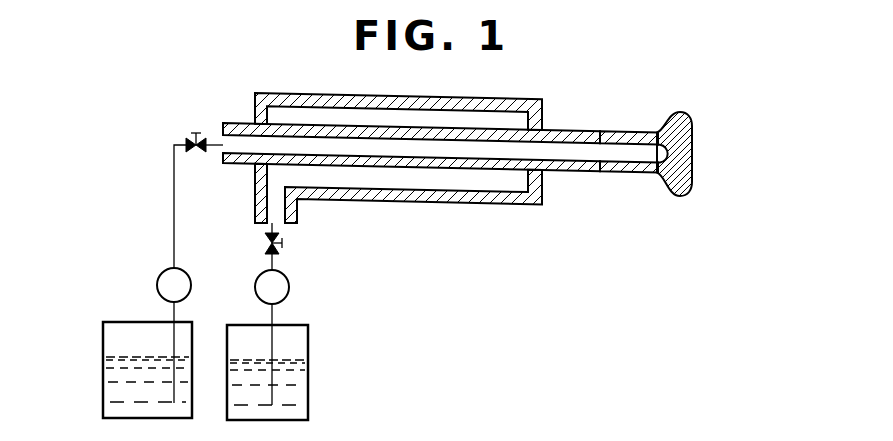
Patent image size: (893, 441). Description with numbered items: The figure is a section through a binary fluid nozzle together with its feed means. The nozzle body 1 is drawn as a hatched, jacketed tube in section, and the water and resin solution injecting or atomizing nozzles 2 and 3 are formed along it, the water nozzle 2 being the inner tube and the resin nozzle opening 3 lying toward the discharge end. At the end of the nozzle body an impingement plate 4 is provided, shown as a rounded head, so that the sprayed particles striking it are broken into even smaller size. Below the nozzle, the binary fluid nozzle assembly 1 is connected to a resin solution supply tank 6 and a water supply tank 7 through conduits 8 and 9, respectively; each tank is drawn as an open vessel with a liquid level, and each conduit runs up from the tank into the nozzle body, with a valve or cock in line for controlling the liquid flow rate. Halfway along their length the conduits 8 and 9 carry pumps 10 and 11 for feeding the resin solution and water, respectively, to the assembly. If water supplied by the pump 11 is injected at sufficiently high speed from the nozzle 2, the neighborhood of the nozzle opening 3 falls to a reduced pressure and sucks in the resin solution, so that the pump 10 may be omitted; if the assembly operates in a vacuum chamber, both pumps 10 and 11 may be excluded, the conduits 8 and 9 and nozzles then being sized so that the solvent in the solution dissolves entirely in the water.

The nozzle body 1 is at (501, 99).
The water injecting nozzle 2 is at (540, 128).
The resin solution injecting nozzle 3 is at (604, 134).
The impingement plate 4 is at (690, 140).
The resin solution supply tank 6 is at (105, 375).
The water supply tank 7 is at (302, 390).
The conduit 8 is at (172, 227).
The conduit 9 is at (273, 318).
The pump 10 is at (162, 272).
The pump 11 is at (285, 280).